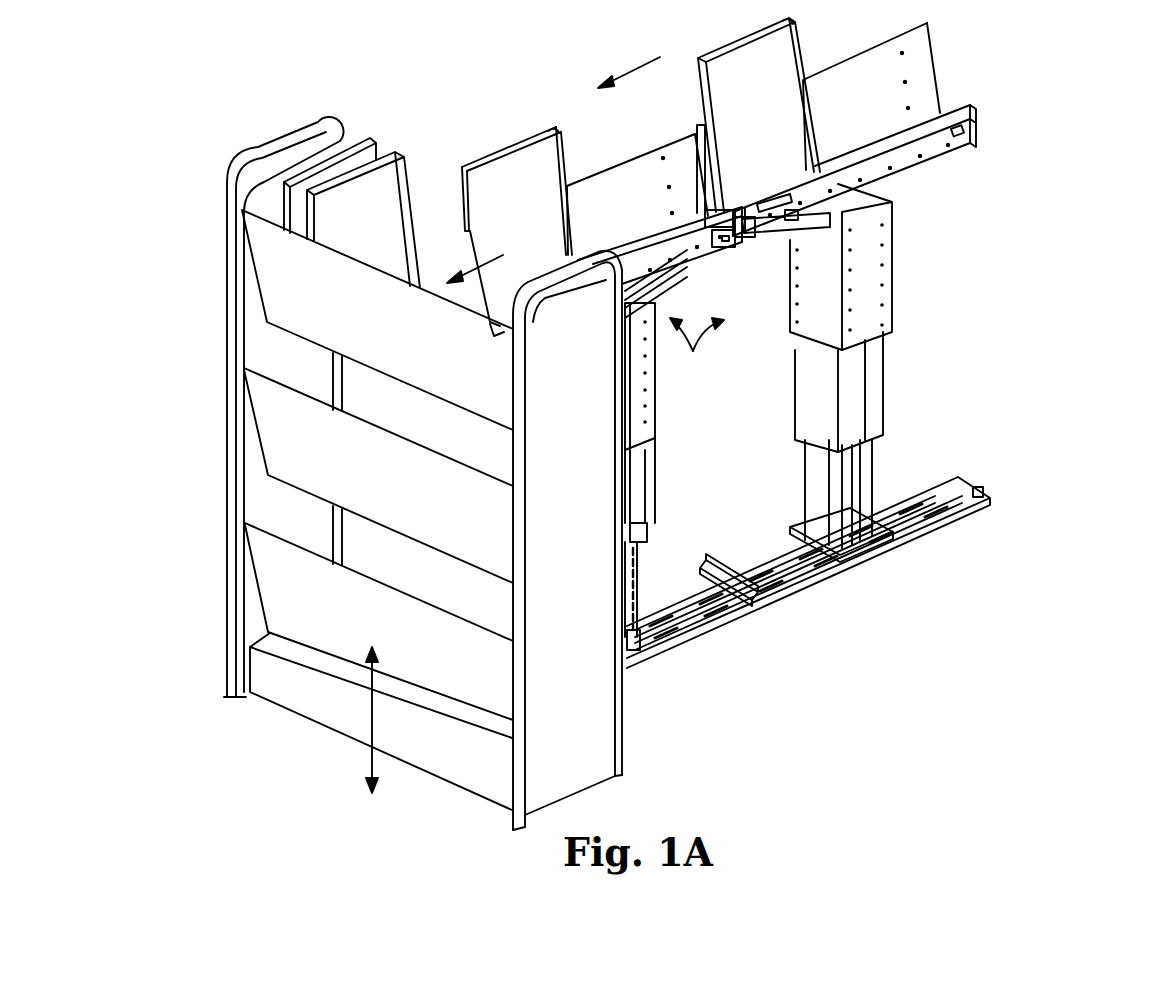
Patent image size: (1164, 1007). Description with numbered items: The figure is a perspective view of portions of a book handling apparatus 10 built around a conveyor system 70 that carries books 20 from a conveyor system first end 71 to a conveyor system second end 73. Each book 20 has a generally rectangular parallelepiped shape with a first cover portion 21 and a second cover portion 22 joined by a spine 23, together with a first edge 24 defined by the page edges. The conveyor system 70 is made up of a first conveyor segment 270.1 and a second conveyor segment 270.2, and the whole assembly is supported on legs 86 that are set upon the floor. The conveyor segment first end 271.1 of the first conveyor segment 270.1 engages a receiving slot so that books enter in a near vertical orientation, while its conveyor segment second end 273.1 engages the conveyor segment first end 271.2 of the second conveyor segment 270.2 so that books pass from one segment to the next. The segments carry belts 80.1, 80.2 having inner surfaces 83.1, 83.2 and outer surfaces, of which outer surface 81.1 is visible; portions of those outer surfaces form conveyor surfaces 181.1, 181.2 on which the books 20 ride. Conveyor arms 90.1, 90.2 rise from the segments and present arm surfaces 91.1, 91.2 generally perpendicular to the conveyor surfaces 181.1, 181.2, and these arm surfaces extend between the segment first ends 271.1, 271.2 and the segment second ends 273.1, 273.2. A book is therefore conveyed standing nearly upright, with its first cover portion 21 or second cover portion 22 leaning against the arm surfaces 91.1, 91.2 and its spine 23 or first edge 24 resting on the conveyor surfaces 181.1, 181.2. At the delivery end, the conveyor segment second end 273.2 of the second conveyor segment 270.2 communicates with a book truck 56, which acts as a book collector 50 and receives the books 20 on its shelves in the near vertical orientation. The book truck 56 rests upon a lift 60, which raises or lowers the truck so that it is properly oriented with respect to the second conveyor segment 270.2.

The book handling apparatus 10 is at (685, 415).
The book 20 is at (330, 150).
The first cover portion 21 is at (560, 150).
The second cover portion 22 is at (464, 195).
The spine 23 is at (465, 192).
The first edge 24 is at (523, 162).
The book collector 50 is at (582, 773).
The book truck 56 is at (612, 507).
The lift 60 is at (302, 702).
The conveyor system 70 is at (808, 513).
The conveyor system first end 71 is at (972, 126).
The conveyor system second end 73 is at (493, 323).
The belt of first conveyor segment 80.1 is at (837, 157).
The belt of second conveyor segment 80.2 is at (630, 253).
The outer surface of first belt 81.1 is at (935, 130).
The inner surface of first belt 83.1 is at (950, 147).
The inner surface of second belt 83.2 is at (690, 258).
The legs 86 is at (633, 405).
The conveyor arm of first segment 90.1 is at (880, 68).
The conveyor arm of second segment 90.2 is at (597, 188).
The arm surface of first conveyor arm 91.1 is at (925, 115).
The arm surface of second conveyor arm 91.2 is at (630, 173).
The conveyor surface of first belt 181.1 is at (930, 93).
The conveyor surface of second belt 181.2 is at (680, 133).
The first conveyor segment 270.1 is at (761, 282).
The second conveyor segment 270.2 is at (658, 272).
The conveyor segment first end of first conveyor segment 271.1 is at (962, 138).
The conveyor segment first end of second conveyor segment 271.2 is at (718, 193).
The conveyor segment second end of first conveyor segment 273.1 is at (762, 210).
The conveyor segment second end of second conveyor segment 273.2 is at (494, 330).